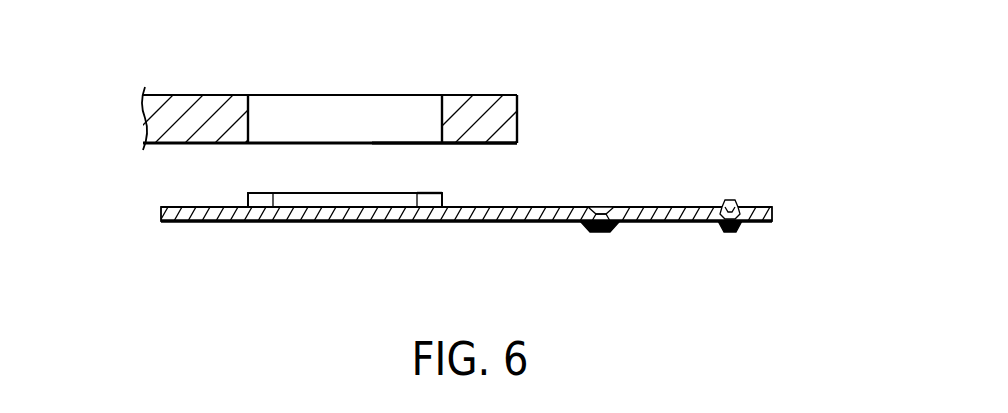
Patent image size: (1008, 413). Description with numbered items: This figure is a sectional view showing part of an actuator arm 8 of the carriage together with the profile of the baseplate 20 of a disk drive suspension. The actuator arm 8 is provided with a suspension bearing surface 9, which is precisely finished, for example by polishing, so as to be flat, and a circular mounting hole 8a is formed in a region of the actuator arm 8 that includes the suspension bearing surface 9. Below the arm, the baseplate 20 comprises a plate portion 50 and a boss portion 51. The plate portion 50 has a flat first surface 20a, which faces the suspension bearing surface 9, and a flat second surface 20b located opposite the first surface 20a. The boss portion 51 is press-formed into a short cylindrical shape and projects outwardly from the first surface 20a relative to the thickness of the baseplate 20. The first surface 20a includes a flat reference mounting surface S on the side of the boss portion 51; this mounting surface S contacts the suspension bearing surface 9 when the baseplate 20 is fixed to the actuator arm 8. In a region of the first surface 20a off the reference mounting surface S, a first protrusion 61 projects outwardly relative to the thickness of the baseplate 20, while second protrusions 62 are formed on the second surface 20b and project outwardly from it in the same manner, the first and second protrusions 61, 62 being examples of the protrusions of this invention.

The actuator arm 8 is at (201, 93).
The mounting hole 8a is at (442, 112).
The suspension bearing surface 9 is at (455, 145).
The reference mounting surface S is at (207, 207).
The baseplate 20 is at (216, 222).
The first surface 20a is at (558, 207).
The second surface 20b is at (515, 222).
The plate portion 50 is at (367, 222).
The boss portion 51 is at (335, 190).
The first protrusion 61 is at (730, 199).
The second protrusion 62 is at (600, 233).